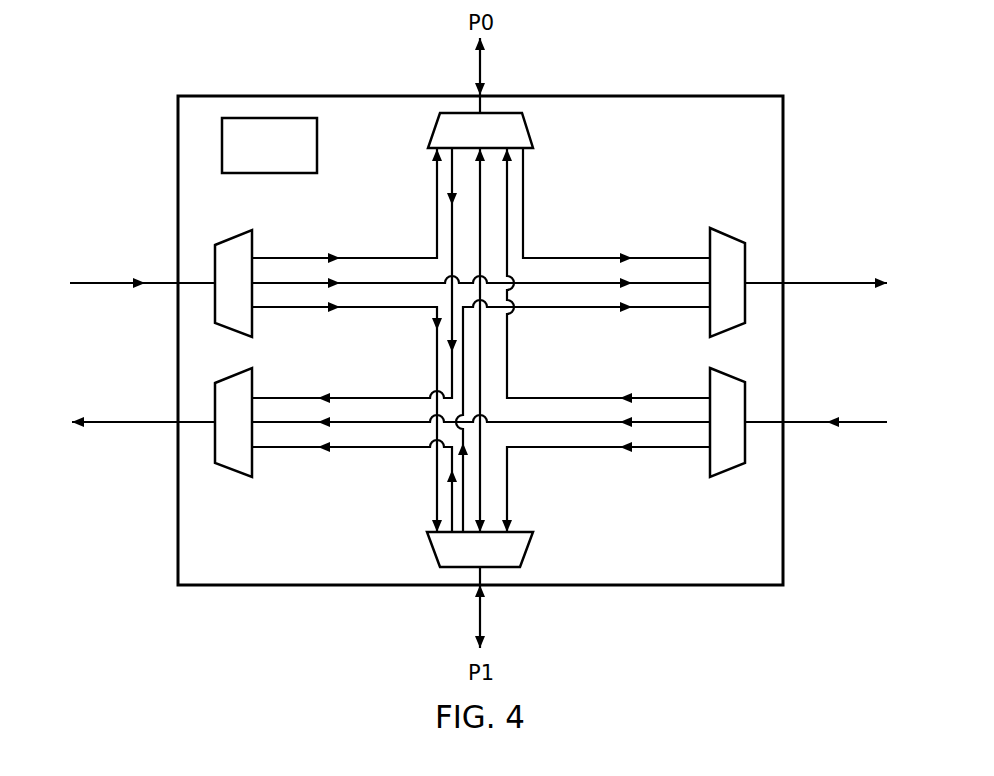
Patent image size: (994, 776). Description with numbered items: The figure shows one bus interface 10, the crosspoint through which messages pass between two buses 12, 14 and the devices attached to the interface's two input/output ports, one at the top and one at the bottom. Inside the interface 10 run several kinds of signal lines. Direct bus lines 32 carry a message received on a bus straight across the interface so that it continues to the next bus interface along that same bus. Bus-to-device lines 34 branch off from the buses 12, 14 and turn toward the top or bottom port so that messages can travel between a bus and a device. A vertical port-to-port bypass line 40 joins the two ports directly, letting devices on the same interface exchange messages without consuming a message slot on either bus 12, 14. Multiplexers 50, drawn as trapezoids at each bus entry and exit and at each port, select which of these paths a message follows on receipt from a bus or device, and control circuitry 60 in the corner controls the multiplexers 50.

The bus interface 10 is at (711, 96).
The bus 12 is at (112, 285).
The bus 14 is at (148, 424).
The direct bus lines 32 is at (283, 424).
The bus-to-device lines 34 is at (373, 257).
The port-to-port bypass line 40 is at (481, 361).
The multiplexers 50 is at (528, 128).
The control circuitry 60 is at (317, 150).